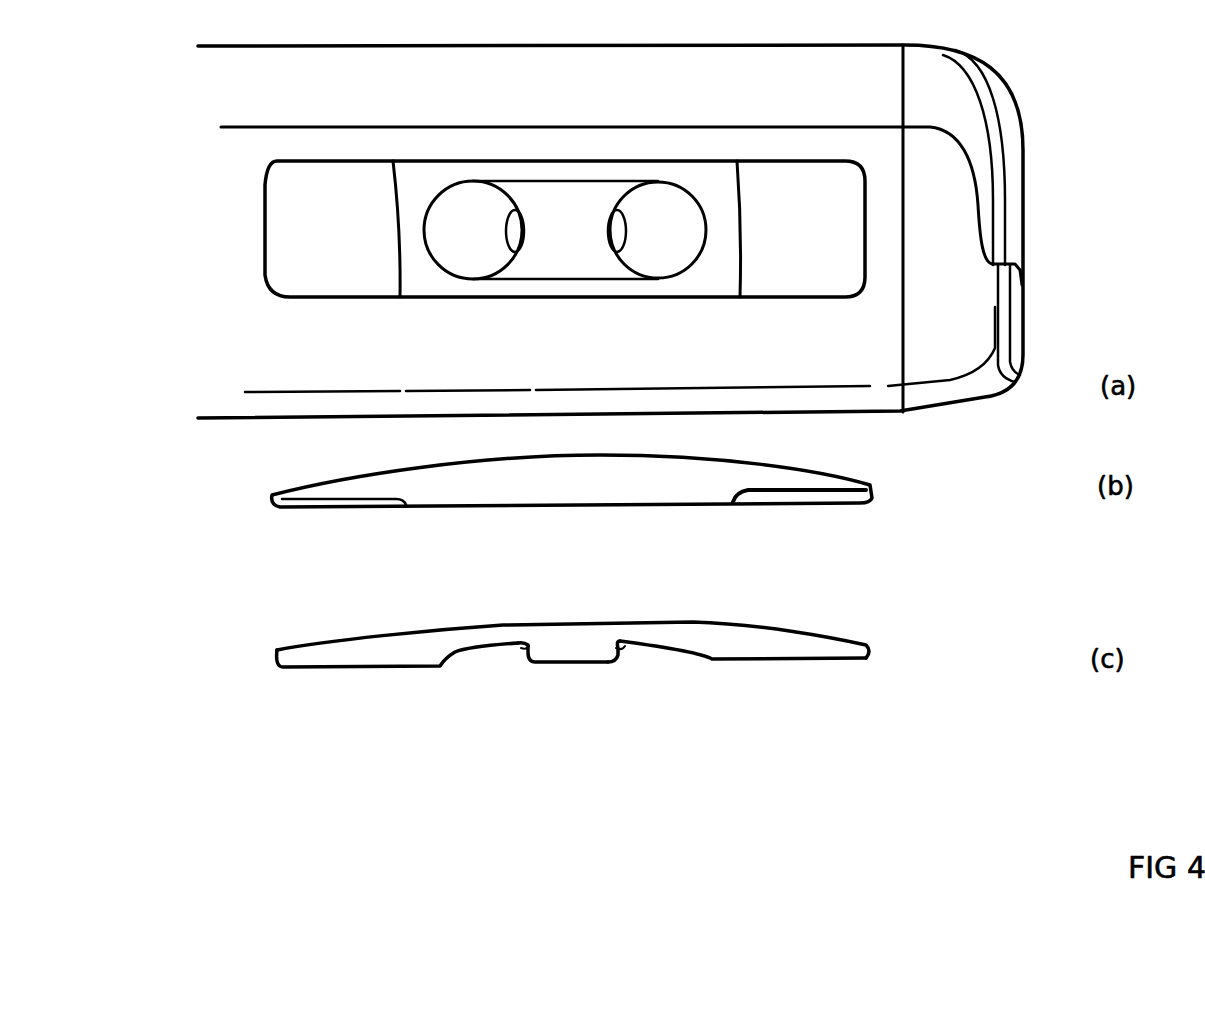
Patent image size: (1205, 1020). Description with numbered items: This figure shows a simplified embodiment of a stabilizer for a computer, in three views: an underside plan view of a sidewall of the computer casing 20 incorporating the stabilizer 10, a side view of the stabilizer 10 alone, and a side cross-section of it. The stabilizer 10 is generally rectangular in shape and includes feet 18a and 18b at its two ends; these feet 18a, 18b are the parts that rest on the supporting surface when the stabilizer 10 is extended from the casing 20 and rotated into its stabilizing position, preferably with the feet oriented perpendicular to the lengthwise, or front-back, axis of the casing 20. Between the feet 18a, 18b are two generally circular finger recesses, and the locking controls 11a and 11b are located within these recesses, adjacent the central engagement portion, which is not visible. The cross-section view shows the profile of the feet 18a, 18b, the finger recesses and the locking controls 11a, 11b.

The stabilizer 10 is at (297, 213).
The locking control 11a is at (515, 230).
The locking control 11b is at (618, 222).
The foot 18a is at (310, 280).
The foot 18b is at (803, 270).
The computer casing 20 is at (870, 87).